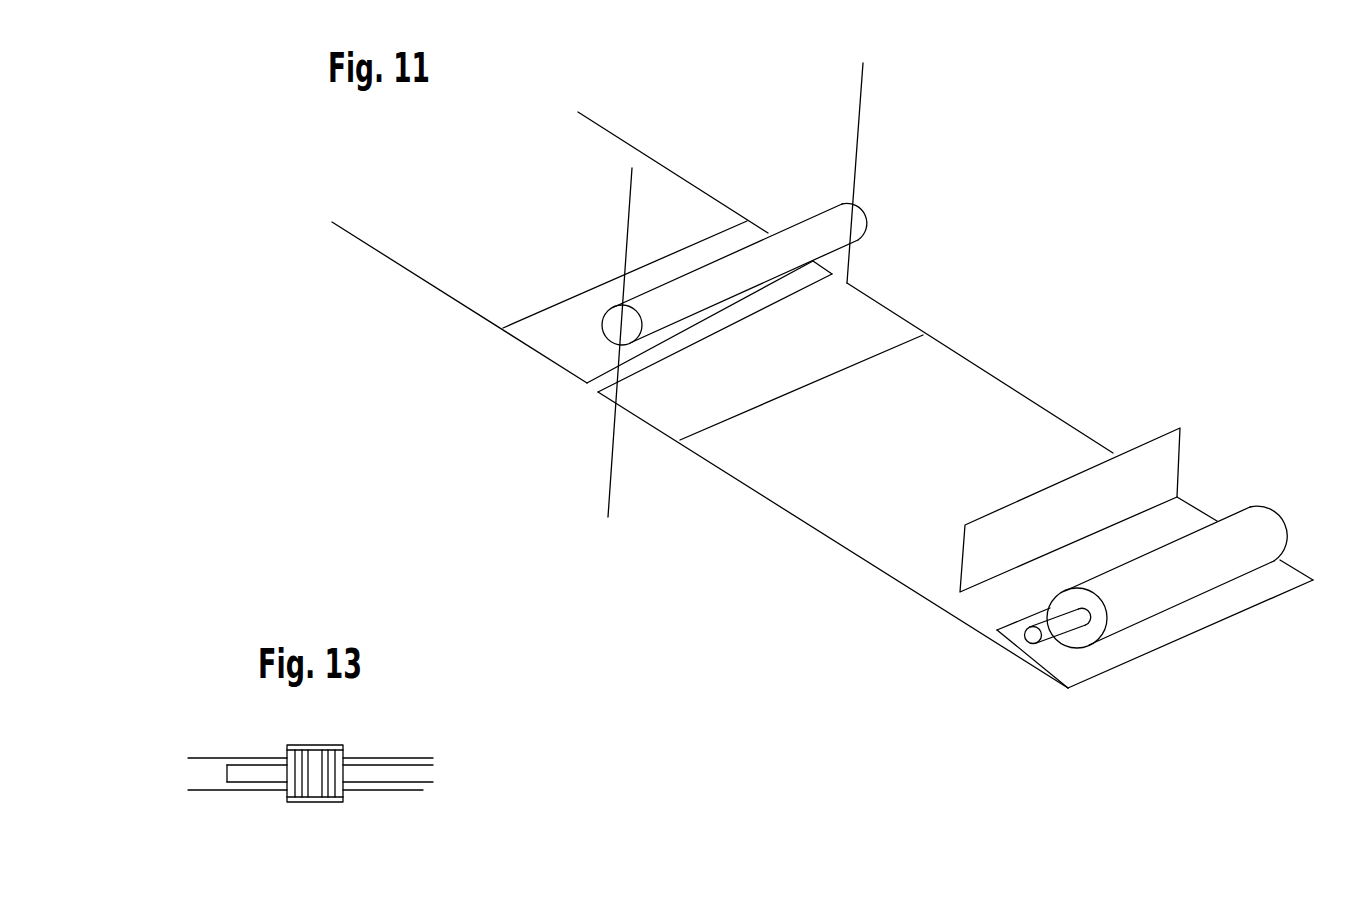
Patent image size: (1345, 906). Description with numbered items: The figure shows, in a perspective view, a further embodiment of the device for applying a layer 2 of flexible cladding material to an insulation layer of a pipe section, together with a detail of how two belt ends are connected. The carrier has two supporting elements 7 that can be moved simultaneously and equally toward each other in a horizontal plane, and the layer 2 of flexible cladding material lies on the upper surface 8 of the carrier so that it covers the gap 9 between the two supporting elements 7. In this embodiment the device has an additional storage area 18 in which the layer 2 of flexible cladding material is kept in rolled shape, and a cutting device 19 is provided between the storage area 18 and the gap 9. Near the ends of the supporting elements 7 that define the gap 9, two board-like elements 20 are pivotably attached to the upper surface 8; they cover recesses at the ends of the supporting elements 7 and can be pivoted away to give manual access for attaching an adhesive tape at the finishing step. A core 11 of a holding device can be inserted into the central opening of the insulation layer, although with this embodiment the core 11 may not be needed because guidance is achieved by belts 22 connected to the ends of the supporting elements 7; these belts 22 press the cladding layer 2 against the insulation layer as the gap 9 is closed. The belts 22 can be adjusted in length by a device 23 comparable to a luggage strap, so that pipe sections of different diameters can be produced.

In FIG. 11, the layer of flexible cladding material 2 is at (1017, 631).
In FIG. 11, the supporting elements 7 is at (430, 287).
In FIG. 11, the upper surface 8 is at (539, 212).
In FIG. 11, the gap 9 is at (585, 397).
In FIG. 11, the core 11 is at (835, 233).
In FIG. 11, the storage area 18 is at (1262, 470).
In FIG. 11, the cutting device 19 is at (1155, 472).
In FIG. 11, the board-like elements 20 is at (563, 340).
In FIG. 13, the belts 22 is at (212, 768).
In FIG. 13, the device comparable to a luggage strap 23 is at (338, 803).